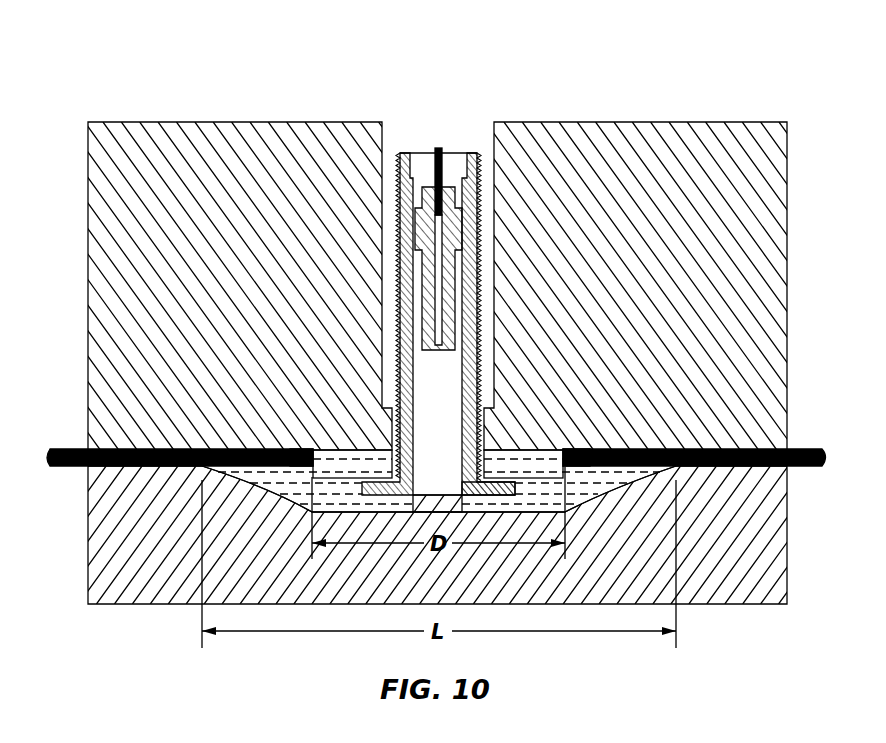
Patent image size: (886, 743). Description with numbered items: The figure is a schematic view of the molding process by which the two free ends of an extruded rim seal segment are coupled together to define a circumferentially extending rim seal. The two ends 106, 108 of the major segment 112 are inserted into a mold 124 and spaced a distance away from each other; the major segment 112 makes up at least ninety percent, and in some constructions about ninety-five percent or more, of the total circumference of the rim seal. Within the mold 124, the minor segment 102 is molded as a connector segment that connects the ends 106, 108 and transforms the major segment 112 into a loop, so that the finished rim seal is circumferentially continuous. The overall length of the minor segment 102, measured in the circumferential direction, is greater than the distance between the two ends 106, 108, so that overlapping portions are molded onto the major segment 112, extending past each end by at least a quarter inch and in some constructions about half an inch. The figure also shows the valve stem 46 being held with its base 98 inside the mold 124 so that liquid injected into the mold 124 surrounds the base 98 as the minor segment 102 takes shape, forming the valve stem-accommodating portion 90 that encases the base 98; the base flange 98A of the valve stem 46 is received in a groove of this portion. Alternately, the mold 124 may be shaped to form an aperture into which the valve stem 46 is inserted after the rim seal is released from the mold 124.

The mold 124 is at (57, 145).
The valve stem 46 is at (484, 178).
The end of major segment 108 is at (299, 452).
The minor segment 102 is at (347, 460).
The base of the valve stem 98 is at (405, 473).
The base flange of the valve stem 98A is at (500, 483).
The end of major segment 106 is at (591, 452).
The major segment 112 is at (805, 448).
The valve stem-accommodating portion 90 is at (337, 499).